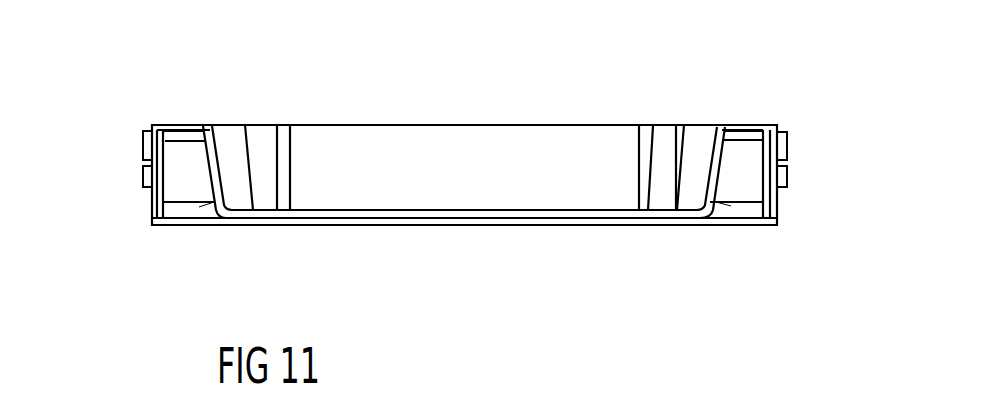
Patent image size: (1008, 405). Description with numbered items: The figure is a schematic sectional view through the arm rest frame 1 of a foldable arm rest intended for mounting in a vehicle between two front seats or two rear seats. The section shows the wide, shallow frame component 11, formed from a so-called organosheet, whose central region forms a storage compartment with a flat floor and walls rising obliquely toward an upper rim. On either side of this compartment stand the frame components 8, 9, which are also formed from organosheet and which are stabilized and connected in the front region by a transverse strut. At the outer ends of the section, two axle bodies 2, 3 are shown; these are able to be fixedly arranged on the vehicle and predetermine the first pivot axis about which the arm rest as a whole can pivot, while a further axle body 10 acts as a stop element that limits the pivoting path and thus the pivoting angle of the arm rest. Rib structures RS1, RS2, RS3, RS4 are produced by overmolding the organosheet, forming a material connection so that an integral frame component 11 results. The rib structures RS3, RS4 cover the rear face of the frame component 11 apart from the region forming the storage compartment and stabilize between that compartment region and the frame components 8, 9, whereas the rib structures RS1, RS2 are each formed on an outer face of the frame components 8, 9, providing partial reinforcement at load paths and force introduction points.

The arm rest frame 1 is at (328, 118).
The axle body 2 is at (789, 178).
The axle body 3 is at (143, 176).
The frame component 8 is at (172, 124).
The frame component 9 is at (732, 125).
The axle body 10 is at (788, 128).
The frame component 11 is at (488, 207).
The rib structure RS1 is at (779, 210).
The rib structure RS2 is at (150, 208).
The rib structure RS3 is at (185, 142).
The rib structure RS4 is at (199, 208).